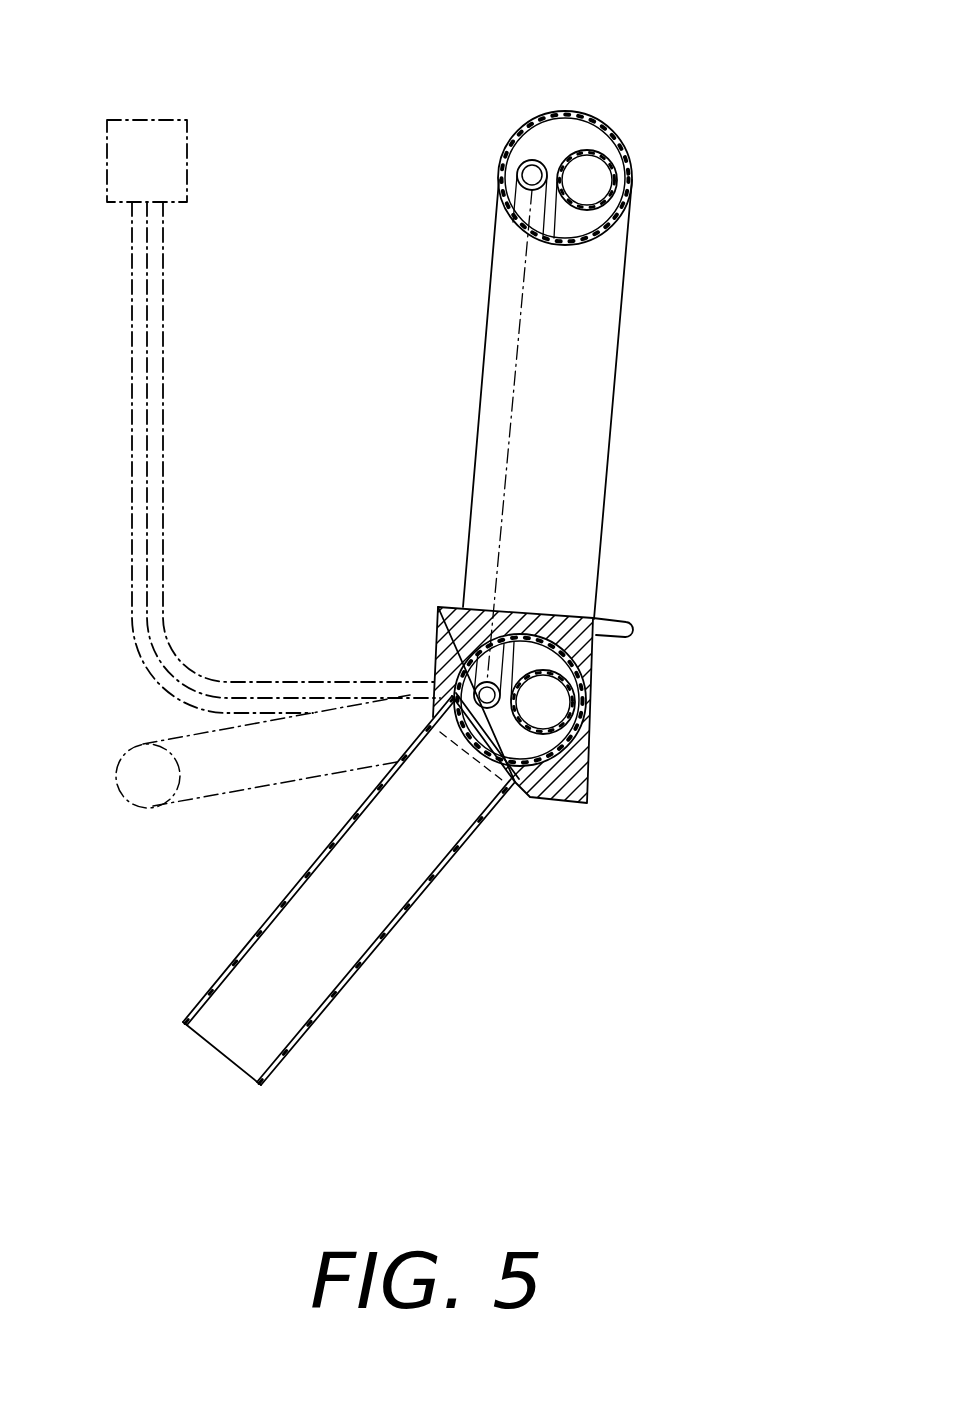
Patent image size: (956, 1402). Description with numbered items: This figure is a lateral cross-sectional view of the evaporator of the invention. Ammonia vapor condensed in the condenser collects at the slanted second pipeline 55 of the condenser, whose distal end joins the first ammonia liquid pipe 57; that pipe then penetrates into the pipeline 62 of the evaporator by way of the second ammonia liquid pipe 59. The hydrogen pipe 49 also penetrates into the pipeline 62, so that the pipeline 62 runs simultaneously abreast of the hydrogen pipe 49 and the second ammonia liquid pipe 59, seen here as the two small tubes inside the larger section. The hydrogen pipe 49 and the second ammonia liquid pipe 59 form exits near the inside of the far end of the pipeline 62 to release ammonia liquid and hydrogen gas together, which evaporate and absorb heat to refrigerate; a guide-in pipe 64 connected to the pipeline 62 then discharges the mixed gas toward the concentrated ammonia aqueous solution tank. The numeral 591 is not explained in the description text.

The hydrogen pipe 49 is at (583, 224).
The second pipeline of condenser 55 is at (173, 120).
The first ammonia liquid pipe 57 is at (192, 660).
The second ammonia liquid pipe 59 is at (520, 198).
The tube axis / inner wire 591 is at (508, 460).
The pipeline of evaporator 62 is at (497, 353).
The guide-in pipe 64 is at (318, 967).